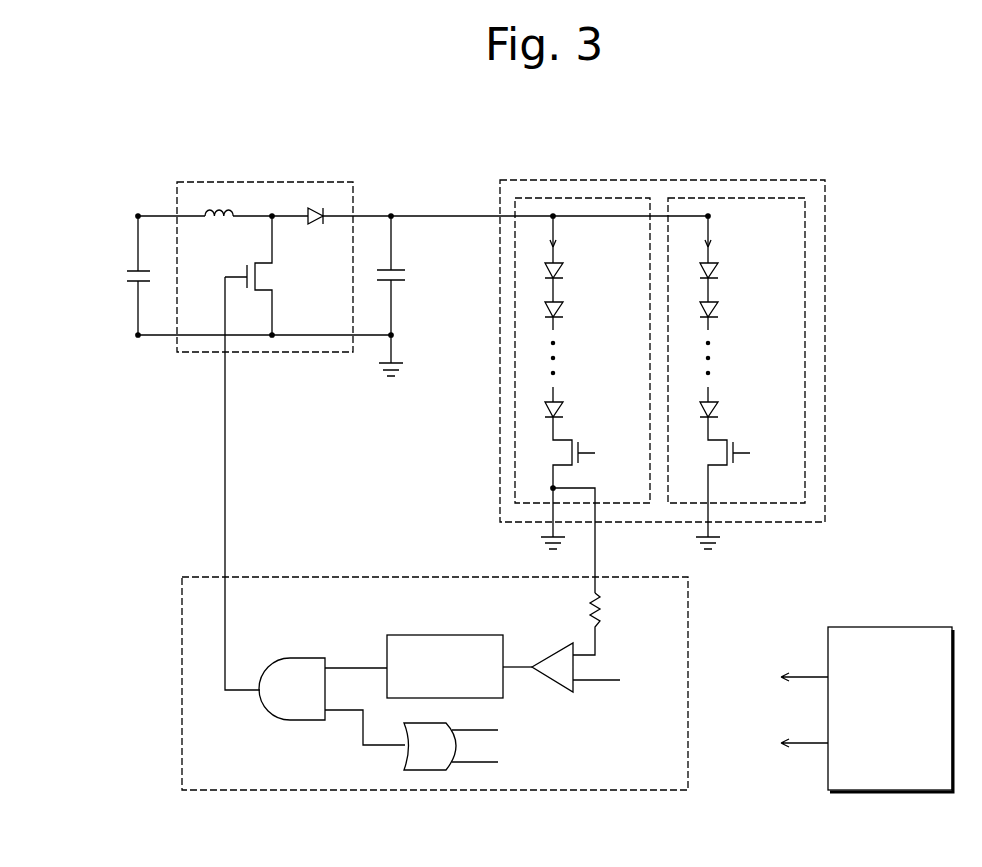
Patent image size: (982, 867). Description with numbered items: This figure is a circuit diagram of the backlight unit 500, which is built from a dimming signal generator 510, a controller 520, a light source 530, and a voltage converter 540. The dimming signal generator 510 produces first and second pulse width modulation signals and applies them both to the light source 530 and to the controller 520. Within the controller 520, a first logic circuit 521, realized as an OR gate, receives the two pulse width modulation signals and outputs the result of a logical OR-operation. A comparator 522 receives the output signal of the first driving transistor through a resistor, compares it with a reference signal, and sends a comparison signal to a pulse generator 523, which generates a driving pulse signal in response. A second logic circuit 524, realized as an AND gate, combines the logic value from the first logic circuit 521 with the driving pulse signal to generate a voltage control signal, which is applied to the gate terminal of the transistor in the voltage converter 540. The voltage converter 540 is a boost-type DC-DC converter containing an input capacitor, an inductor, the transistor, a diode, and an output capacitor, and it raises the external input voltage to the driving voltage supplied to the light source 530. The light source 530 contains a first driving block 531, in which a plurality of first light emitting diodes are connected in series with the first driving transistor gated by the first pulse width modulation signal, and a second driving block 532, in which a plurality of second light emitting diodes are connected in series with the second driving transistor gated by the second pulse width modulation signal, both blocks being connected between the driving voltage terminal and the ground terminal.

The backlight unit 500 is at (859, 114).
The dimming signal generator 510 is at (907, 627).
The controller 520 is at (307, 577).
The first logic circuit 521 is at (405, 772).
The comparator 522 is at (553, 653).
The pulse generator 523 is at (455, 635).
The second logic circuit 524 is at (295, 658).
The light source 530 is at (777, 180).
The first driving block 531 is at (545, 198).
The second driving block 532 is at (698, 198).
The voltage converter 540 is at (292, 181).